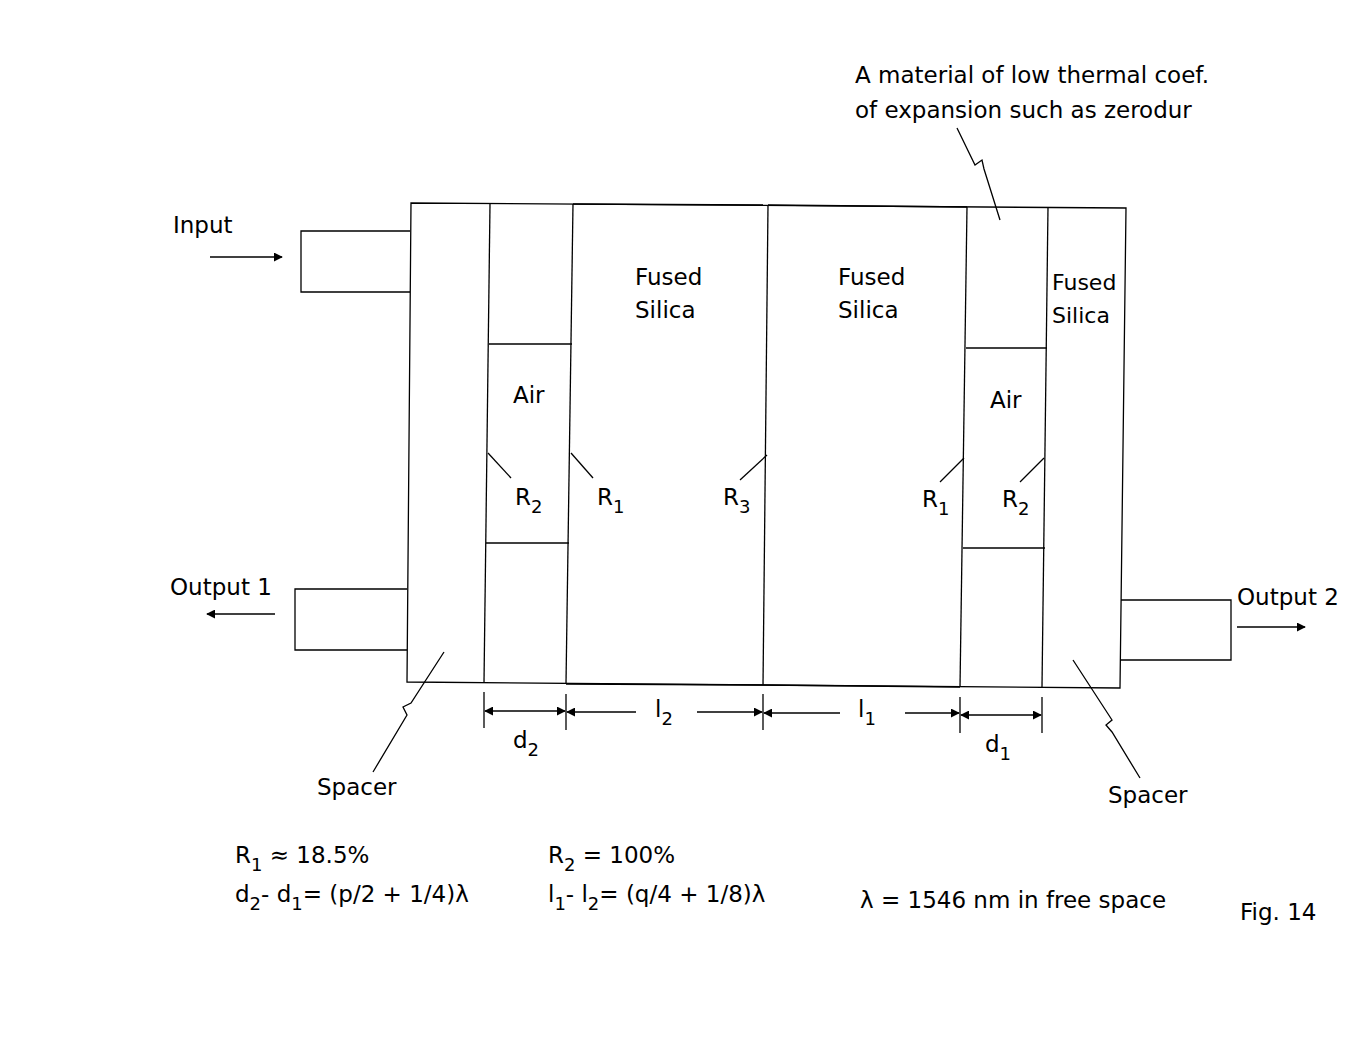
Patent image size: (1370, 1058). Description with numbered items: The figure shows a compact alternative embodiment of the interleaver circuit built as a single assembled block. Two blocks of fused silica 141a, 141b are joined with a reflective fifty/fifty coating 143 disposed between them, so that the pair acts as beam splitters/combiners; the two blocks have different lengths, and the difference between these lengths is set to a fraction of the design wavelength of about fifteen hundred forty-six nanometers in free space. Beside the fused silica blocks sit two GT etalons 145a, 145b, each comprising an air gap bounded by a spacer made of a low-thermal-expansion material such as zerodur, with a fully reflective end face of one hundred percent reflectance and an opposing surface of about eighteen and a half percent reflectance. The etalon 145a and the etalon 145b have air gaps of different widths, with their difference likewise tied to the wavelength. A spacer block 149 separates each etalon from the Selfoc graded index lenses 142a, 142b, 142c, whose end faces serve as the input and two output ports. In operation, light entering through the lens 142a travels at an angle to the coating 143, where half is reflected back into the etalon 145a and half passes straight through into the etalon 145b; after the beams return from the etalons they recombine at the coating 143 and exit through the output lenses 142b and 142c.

The Selfoc graded index lens 142a is at (338, 229).
The Selfoc graded index lens 142b is at (350, 595).
The Selfoc graded index lens 142c is at (1138, 603).
The spacer block 149 is at (467, 221).
The GT etalon 145a is at (555, 228).
The GT etalon 145b is at (990, 653).
The fused silica block 141a is at (717, 220).
The fused silica block 141b is at (845, 220).
The reflective 50/50 coating 143 is at (763, 611).